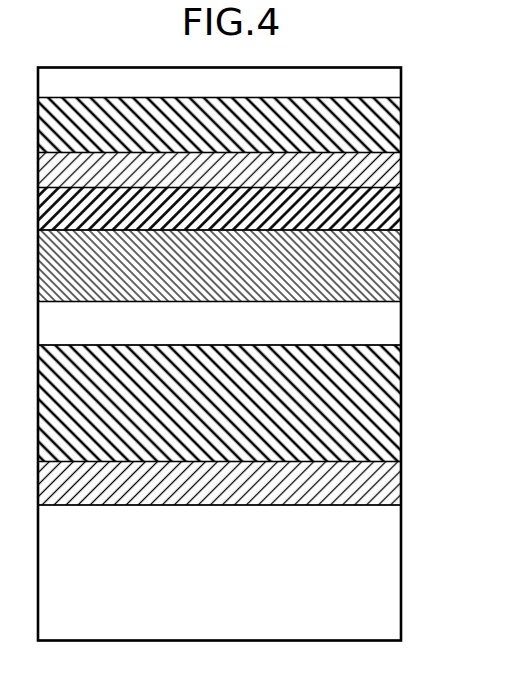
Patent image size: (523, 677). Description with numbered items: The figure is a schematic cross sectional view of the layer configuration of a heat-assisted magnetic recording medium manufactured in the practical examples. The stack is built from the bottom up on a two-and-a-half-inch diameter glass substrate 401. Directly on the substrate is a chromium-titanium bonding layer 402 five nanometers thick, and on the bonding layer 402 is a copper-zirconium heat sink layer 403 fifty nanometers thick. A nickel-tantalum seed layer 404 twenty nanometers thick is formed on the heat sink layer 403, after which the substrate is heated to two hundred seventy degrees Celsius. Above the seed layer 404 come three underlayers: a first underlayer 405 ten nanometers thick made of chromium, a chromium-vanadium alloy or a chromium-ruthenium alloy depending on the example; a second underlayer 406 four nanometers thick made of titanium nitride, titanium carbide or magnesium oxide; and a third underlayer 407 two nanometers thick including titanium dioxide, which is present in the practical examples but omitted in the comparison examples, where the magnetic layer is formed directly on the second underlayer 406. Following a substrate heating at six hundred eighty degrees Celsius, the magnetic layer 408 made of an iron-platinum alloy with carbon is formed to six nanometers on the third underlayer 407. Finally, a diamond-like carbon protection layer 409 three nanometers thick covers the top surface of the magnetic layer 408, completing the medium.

The protection layer 409 is at (388, 83).
The magnetic layer 408 is at (392, 126).
The third underlayer 407 is at (392, 172).
The second underlayer 406 is at (398, 210).
The first underlayer 405 is at (392, 267).
The seed layer 404 is at (388, 325).
The heat sink layer 403 is at (388, 406).
The bonding layer 402 is at (388, 487).
The glass substrate 401 is at (388, 573).